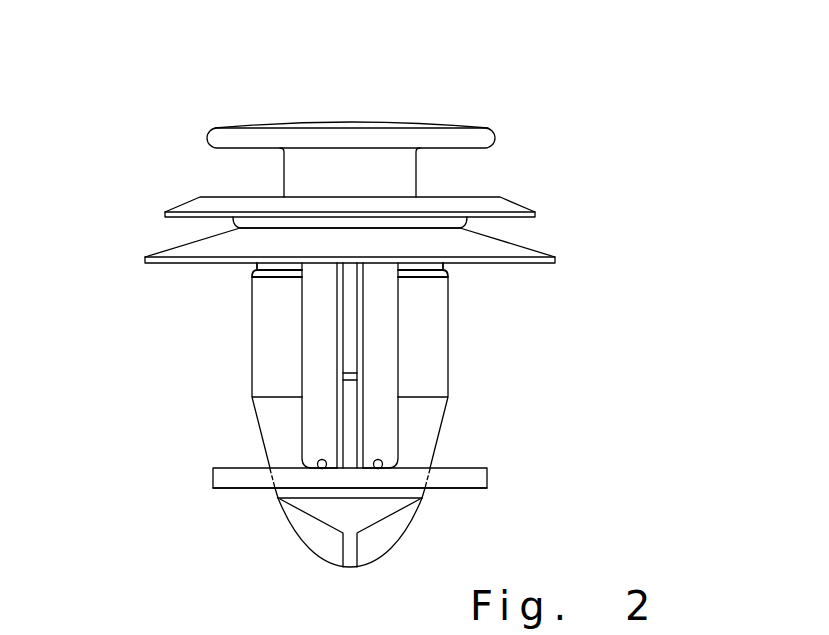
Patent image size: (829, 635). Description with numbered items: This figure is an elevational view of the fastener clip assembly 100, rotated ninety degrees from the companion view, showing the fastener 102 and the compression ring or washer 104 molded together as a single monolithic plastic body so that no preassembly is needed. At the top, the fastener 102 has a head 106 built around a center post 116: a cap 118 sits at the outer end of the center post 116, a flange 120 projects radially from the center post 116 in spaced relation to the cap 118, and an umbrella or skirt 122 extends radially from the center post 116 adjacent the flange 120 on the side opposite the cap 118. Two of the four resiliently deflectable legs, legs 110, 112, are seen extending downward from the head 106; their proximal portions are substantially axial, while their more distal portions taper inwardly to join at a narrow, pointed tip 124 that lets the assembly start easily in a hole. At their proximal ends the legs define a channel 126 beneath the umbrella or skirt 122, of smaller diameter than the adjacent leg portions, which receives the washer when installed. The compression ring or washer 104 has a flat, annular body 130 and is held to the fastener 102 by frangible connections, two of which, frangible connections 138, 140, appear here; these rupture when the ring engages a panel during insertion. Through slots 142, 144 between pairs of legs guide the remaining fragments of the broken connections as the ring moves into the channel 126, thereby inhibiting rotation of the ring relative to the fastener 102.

The fastener clip assembly 100 is at (145, 128).
The fastener 102 is at (350, 106).
The compression ring or washer 104 is at (511, 472).
The head 106 is at (515, 163).
The resiliently deflectable leg 110 is at (258, 328).
The resiliently deflectable leg 112 is at (430, 322).
The center post 116 is at (290, 175).
The cap 118 is at (235, 133).
The flange 120 is at (178, 208).
The umbrella or skirt 122 is at (170, 250).
The tip 124 is at (348, 567).
The channel 126 is at (442, 270).
The body 130 is at (458, 488).
The frangible connection 138 is at (320, 460).
The frangible connection 140 is at (380, 460).
The through slot 142 is at (317, 365).
The through slot 144 is at (382, 385).